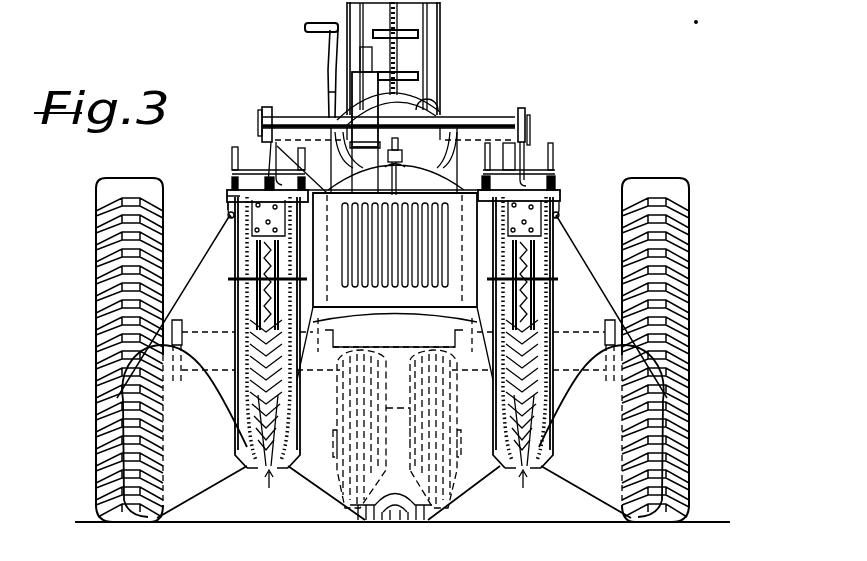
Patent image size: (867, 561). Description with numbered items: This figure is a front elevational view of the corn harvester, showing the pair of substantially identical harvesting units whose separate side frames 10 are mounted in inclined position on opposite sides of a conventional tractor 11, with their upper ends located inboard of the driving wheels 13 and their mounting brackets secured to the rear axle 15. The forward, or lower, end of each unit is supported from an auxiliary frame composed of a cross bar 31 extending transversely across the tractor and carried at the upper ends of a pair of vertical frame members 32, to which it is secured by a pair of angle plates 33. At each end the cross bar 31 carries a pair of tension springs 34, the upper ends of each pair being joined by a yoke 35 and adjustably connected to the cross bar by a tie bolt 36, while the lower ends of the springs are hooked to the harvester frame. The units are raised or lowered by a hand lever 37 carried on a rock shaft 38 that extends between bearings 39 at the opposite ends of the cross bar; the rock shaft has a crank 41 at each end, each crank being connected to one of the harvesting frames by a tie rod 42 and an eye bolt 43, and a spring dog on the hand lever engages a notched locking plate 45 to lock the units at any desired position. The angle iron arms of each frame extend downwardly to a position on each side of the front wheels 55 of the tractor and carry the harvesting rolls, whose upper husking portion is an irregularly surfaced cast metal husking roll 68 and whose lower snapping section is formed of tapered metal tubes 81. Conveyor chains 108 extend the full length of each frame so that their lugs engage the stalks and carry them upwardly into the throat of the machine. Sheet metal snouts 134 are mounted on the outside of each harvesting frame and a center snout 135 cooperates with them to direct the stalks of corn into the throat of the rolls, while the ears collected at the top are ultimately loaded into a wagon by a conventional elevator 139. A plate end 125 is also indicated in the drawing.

The side frame 10 is at (394, 493).
The tractor 11 is at (485, 146).
The driving wheels 13 is at (97, 257).
The rear axle 15 is at (393, 344).
The cross bar 31 is at (449, 112).
The vertical frame members 32 is at (333, 298).
The angle plates 33 is at (278, 145).
The tension springs 34 is at (227, 191).
The yoke 35 is at (252, 172).
The tie bolt 36 is at (309, 136).
The hand lever 37 is at (308, 24).
The rock shaft 38 is at (303, 125).
The bearings 39 is at (272, 110).
The crank 41 is at (261, 112).
The tie rod 42 is at (268, 152).
The eye bolt 43 is at (228, 214).
The notched locking plate 45 is at (357, 174).
The front wheels 55 is at (418, 523).
The husking roll 68 is at (249, 269).
The tapered metal tubes 81 is at (262, 440).
The conveyor chains 108 is at (250, 298).
The plate end 125 is at (195, 190).
The sheet metal snouts 134 is at (216, 462).
The center snout 135 is at (486, 481).
The elevator 139 is at (412, 33).